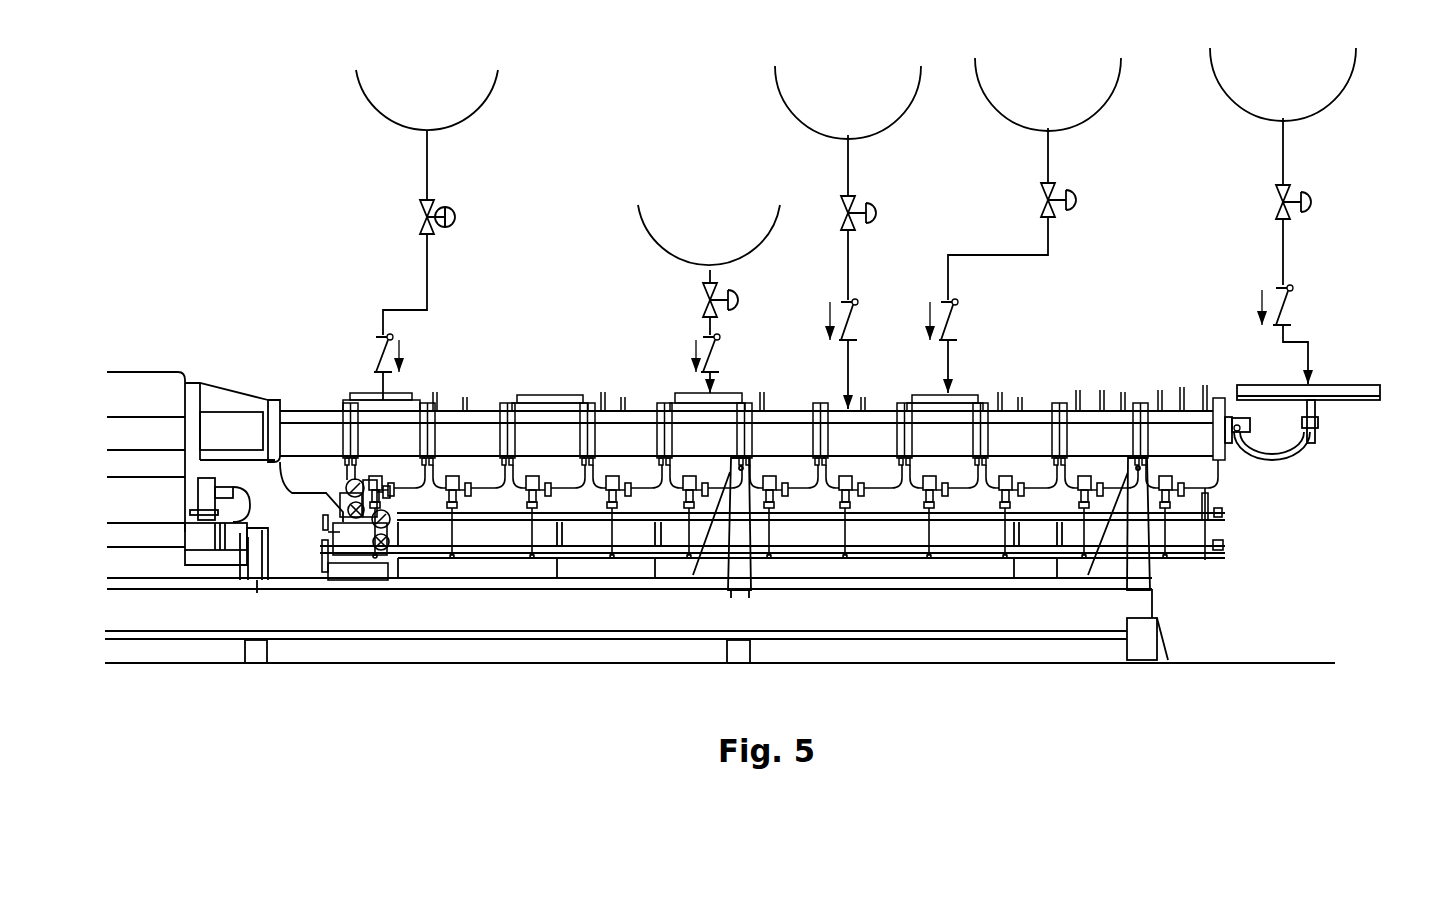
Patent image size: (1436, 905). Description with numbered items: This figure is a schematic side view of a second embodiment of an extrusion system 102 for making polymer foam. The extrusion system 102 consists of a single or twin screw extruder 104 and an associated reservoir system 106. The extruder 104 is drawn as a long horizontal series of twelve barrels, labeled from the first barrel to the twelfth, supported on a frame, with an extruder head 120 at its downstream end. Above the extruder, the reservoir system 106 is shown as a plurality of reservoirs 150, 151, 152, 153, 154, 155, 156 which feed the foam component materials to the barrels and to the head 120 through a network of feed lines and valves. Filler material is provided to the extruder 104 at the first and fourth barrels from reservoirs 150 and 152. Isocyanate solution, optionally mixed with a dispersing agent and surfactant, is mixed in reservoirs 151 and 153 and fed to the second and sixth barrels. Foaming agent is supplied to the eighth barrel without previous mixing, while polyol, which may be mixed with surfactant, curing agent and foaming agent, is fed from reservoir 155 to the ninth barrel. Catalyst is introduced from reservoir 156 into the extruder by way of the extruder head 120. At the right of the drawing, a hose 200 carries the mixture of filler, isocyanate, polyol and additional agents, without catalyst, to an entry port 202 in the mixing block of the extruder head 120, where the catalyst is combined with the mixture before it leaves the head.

The extrusion system 102 is at (1350, 525).
The extruder 104 is at (977, 386).
The reservoir system 106 is at (266, 133).
The extruder head 120 is at (1352, 446).
The reservoir 150 is at (311, 412).
The reservoir 151 is at (487, 97).
The reservoir 152 is at (548, 394).
The reservoir 153 is at (764, 248).
The reservoir 154 is at (913, 93).
The reservoir 155 is at (1112, 86).
The reservoir 156 is at (1343, 85).
The hose 200 is at (1292, 466).
The entry port 202 is at (1331, 420).